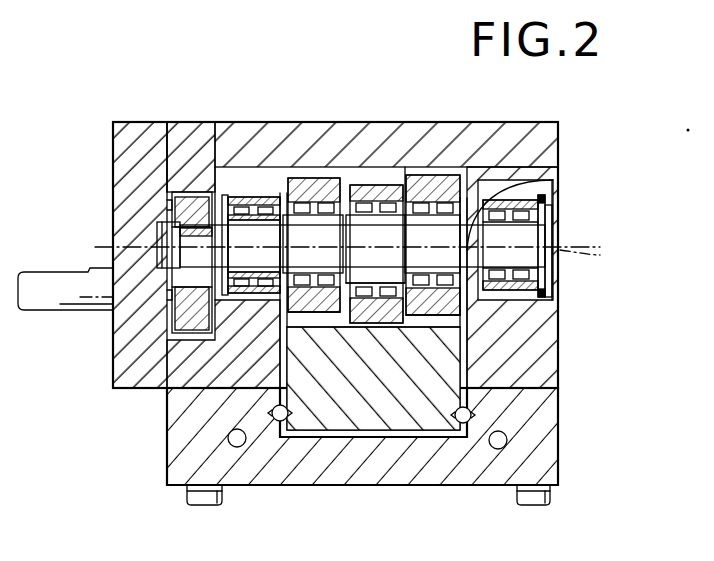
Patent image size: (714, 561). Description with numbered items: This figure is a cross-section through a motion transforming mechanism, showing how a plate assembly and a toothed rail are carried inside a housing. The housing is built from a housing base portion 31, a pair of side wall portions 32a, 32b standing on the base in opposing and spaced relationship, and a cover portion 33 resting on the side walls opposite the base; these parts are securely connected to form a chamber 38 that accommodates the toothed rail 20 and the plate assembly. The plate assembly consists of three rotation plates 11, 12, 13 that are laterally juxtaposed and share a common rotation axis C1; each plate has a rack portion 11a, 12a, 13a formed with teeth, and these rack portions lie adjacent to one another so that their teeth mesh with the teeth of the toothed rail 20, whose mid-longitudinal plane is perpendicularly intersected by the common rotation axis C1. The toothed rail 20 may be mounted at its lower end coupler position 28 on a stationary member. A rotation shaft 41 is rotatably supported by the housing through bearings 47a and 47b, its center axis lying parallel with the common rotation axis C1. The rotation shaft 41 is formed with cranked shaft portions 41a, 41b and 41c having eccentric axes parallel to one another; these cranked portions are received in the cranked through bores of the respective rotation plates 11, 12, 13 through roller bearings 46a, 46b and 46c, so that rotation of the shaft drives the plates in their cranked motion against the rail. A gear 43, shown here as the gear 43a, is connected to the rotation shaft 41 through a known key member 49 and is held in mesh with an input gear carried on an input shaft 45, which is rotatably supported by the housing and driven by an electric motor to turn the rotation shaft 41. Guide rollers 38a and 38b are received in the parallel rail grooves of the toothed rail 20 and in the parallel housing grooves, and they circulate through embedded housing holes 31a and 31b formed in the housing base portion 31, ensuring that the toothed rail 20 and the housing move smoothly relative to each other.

The rotation plate 11 is at (317, 228).
The rack portion 11a is at (326, 330).
The rotation plate 12 is at (377, 208).
The rack portion 12a is at (370, 325).
The rotation plate 13 is at (460, 233).
The rack portion 13a is at (437, 310).
The toothed rail 20 is at (410, 445).
The lower end coupler position 28 is at (368, 445).
The housing base portion 31 is at (300, 462).
The embedded housing hole 31a is at (228, 440).
The embedded housing hole 31b is at (507, 442).
The side wall portion 32a is at (186, 389).
The side wall portion 32b is at (532, 356).
The cover portion 33 is at (517, 135).
The chamber 38 is at (405, 200).
The guide roller 38a is at (278, 422).
The guide roller 38b is at (466, 425).
The rotation shaft 41 is at (550, 258).
The cranked shaft portion 41a is at (332, 195).
The cranked shaft portion 41b is at (350, 332).
The cranked shaft portion 41c is at (553, 182).
The gear 43 is at (170, 322).
The gear 43a is at (167, 203).
The input shaft 45 is at (60, 312).
The roller bearing 46a is at (280, 305).
The roller bearing 46b is at (356, 198).
The roller bearing 46c is at (437, 200).
The bearing 47a is at (253, 197).
The bearing 47b is at (541, 222).
The key member 49 is at (167, 213).
The common rotation axis C1 is at (596, 267).